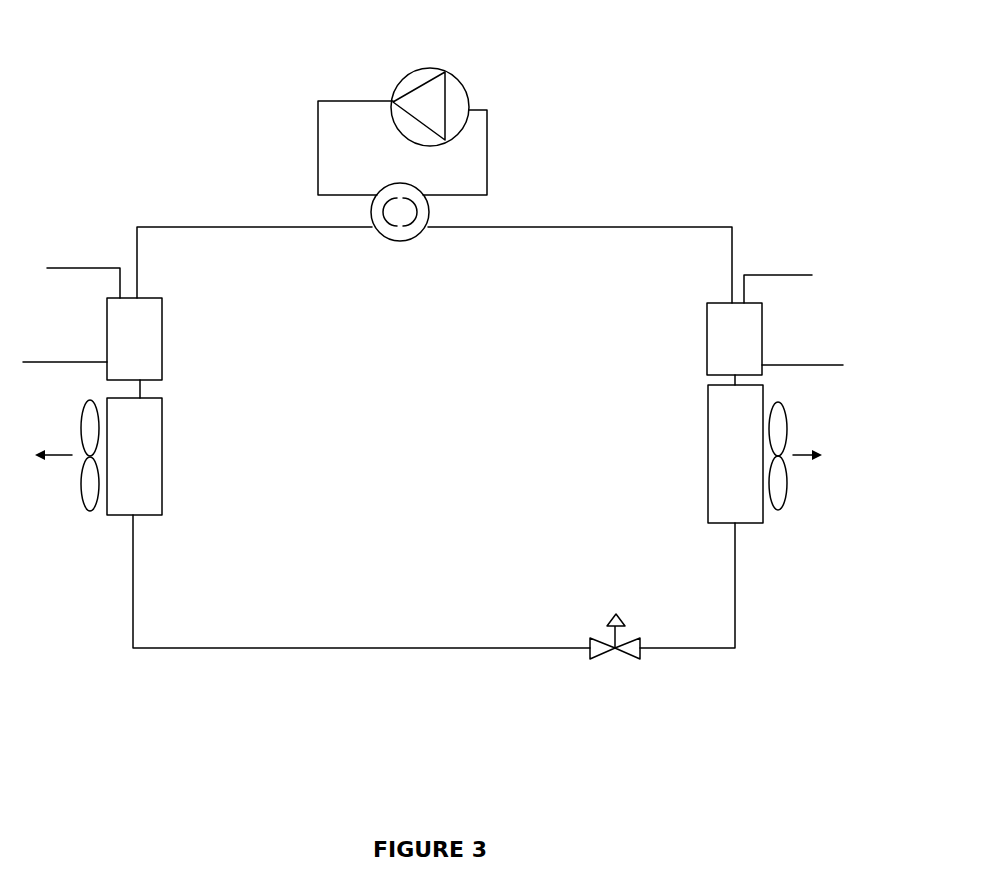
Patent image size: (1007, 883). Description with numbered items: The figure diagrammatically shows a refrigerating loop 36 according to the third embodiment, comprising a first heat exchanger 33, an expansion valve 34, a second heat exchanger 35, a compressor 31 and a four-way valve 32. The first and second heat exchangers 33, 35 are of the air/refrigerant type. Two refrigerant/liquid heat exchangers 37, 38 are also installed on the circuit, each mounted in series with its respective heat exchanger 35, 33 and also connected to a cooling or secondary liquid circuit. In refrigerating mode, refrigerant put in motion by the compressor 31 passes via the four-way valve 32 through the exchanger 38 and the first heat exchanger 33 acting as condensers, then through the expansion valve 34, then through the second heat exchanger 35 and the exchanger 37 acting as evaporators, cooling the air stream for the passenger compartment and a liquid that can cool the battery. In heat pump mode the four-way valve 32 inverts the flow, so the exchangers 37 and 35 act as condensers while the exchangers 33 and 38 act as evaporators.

The compressor 31 is at (482, 85).
The four-way valve 32 is at (426, 253).
The first heat exchanger 33 is at (182, 513).
The expansion valve 34 is at (654, 666).
The second heat exchanger 35 is at (774, 535).
The refrigerating loop 36 is at (642, 215).
The refrigerant/liquid heat exchanger 37 is at (775, 345).
The refrigerant/liquid heat exchanger 38 is at (178, 363).